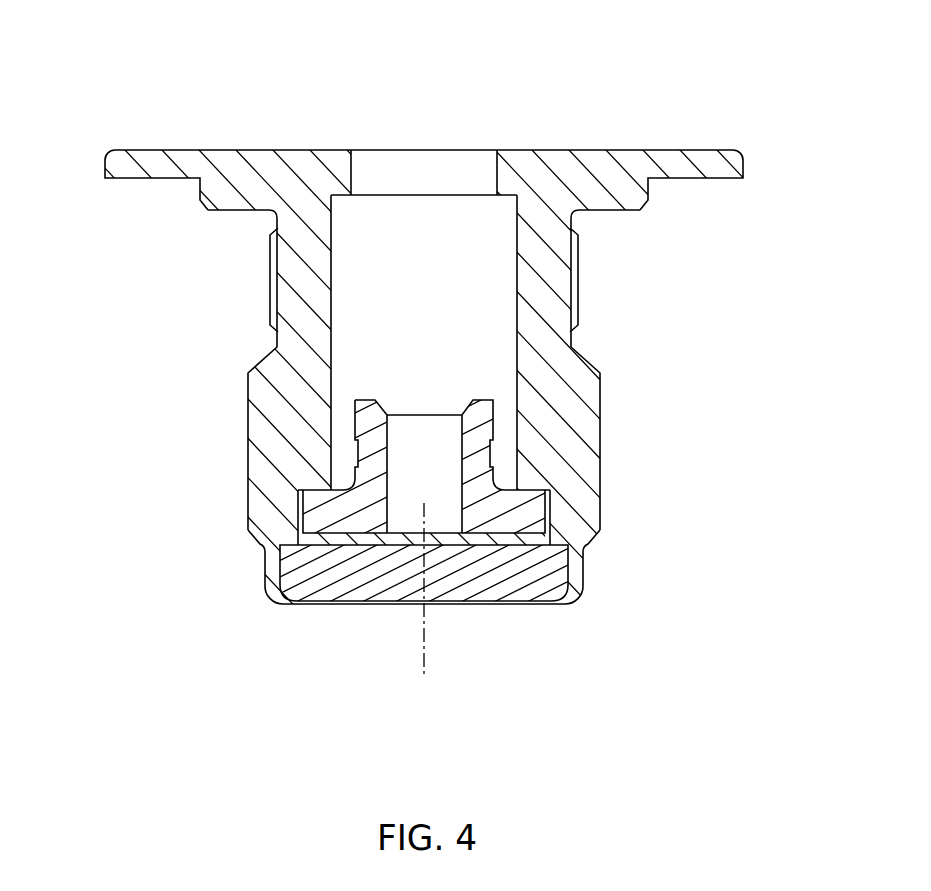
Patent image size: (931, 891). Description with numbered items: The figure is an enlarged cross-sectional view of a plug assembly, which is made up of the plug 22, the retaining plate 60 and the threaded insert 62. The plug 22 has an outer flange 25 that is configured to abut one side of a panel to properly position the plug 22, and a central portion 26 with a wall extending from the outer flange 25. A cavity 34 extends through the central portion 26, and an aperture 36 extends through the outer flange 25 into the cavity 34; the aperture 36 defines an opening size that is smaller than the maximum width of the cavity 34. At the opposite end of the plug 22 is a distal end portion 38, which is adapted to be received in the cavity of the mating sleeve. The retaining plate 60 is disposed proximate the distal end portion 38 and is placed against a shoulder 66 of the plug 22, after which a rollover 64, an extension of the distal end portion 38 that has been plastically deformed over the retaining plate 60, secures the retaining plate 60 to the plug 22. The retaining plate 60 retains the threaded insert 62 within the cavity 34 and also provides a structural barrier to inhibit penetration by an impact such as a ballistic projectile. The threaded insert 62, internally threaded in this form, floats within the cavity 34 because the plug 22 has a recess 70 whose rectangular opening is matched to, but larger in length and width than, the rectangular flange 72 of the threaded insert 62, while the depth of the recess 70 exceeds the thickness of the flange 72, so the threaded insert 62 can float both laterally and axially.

The plug 22 is at (192, 86).
The outer flange 25 is at (700, 162).
The central portion 26 is at (594, 273).
The cavity 34 is at (436, 298).
The aperture 36 is at (425, 142).
The distal end portion 38 is at (240, 580).
The retaining plate 60 is at (548, 572).
The threaded insert 62 is at (482, 453).
The rollover 64 is at (562, 600).
The shoulder 66 is at (332, 488).
The recess 70 is at (299, 509).
The flange 72 is at (527, 518).